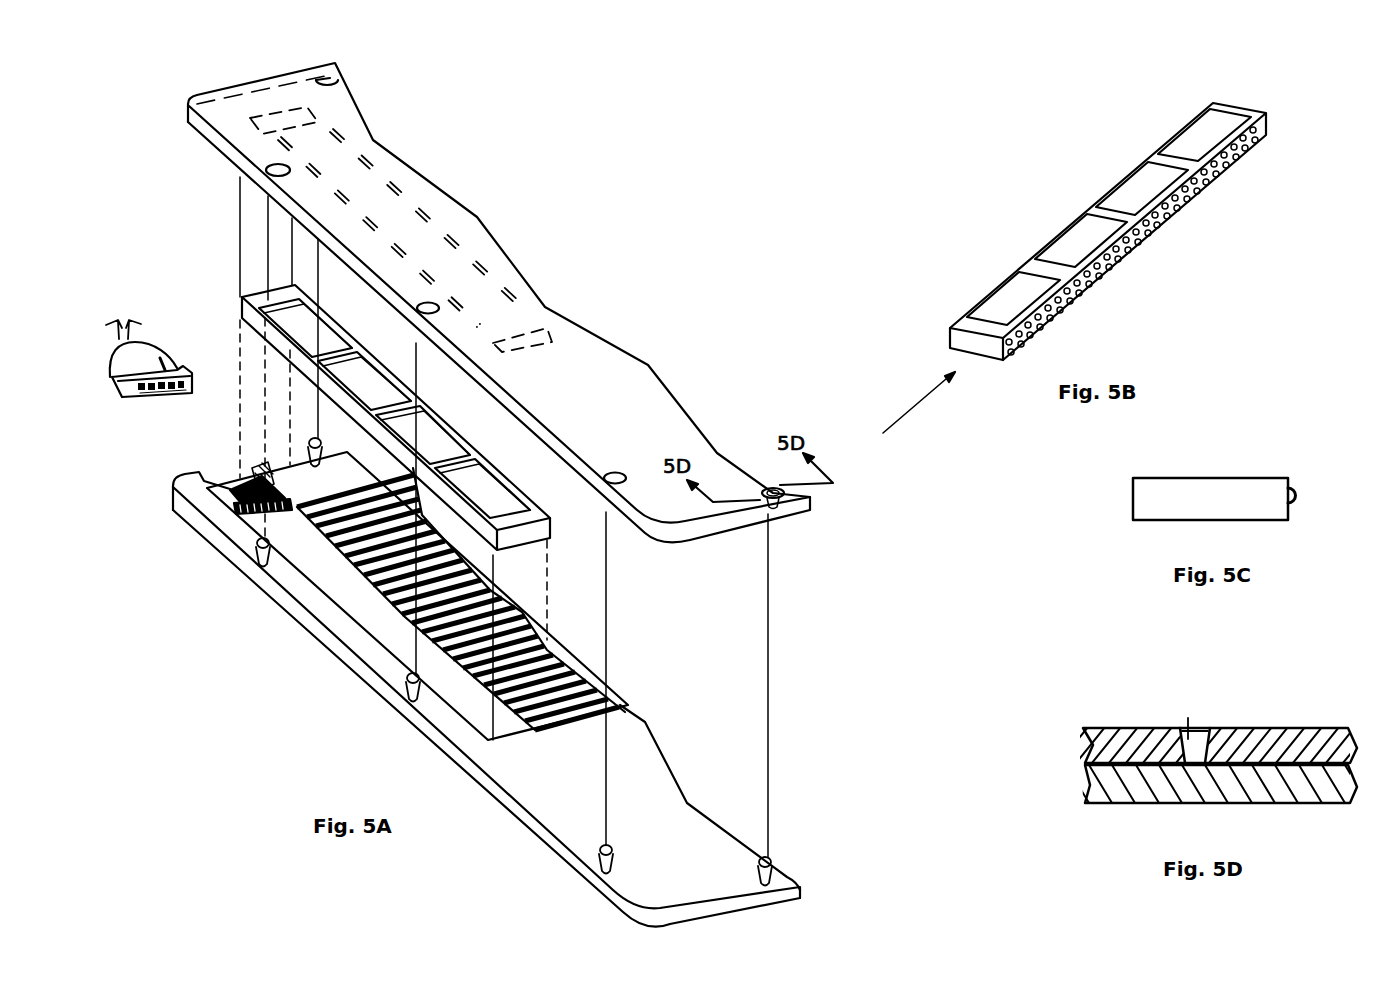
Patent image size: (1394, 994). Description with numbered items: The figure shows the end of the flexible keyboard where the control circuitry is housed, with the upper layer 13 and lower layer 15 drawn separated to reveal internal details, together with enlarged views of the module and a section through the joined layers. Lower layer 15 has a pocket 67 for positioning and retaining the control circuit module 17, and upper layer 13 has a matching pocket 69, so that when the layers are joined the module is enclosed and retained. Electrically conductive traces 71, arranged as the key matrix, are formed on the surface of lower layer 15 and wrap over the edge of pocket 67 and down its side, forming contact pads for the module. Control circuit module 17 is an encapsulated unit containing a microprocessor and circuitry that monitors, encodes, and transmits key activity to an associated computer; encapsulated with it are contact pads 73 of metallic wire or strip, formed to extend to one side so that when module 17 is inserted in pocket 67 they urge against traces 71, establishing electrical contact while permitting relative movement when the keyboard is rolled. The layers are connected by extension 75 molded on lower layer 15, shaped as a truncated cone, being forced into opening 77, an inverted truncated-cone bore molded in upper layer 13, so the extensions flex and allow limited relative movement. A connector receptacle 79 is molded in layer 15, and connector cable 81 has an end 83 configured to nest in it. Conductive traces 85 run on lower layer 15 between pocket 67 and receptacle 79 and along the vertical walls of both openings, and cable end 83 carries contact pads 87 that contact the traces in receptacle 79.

In FIG. 5A, the upper layer 13 is at (590, 347).
In FIG. 5D, the upper layer 13 is at (1085, 743).
In FIG. 5A, the lower layer 15 is at (657, 780).
In FIG. 5D, the lower layer 15 is at (1085, 783).
In FIG. 5A, the control circuit module 17 is at (243, 313).
In FIG. 5B, the control circuit module 17 is at (1032, 272).
In FIG. 5C, the control circuit module 17 is at (1193, 478).
In FIG. 5A, the pocket 67 is at (360, 610).
In FIG. 5A, the matching pocket 69 is at (378, 205).
In FIG. 5A, the electrically conductive traces 71 is at (523, 606).
In FIG. 5B, the contact pads 73 is at (1176, 232).
In FIG. 5C, the contact pads 73 is at (1318, 492).
In FIG. 5A, the extension 75 is at (767, 860).
In FIG. 5B, the extension 75 is at (917, 403).
In FIG. 5D, the extension 75 is at (1188, 733).
In FIG. 5A, the opening 77 is at (768, 480).
In FIG. 5D, the opening 77 is at (1203, 733).
In FIG. 5A, the connector receptacle 79 is at (227, 480).
In FIG. 5A, the connector cable 81 is at (100, 350).
In FIG. 5A, the cable end 83 is at (118, 390).
In FIG. 5A, the conductive traces 85 is at (253, 473).
In FIG. 5A, the contact pads 87 is at (163, 366).